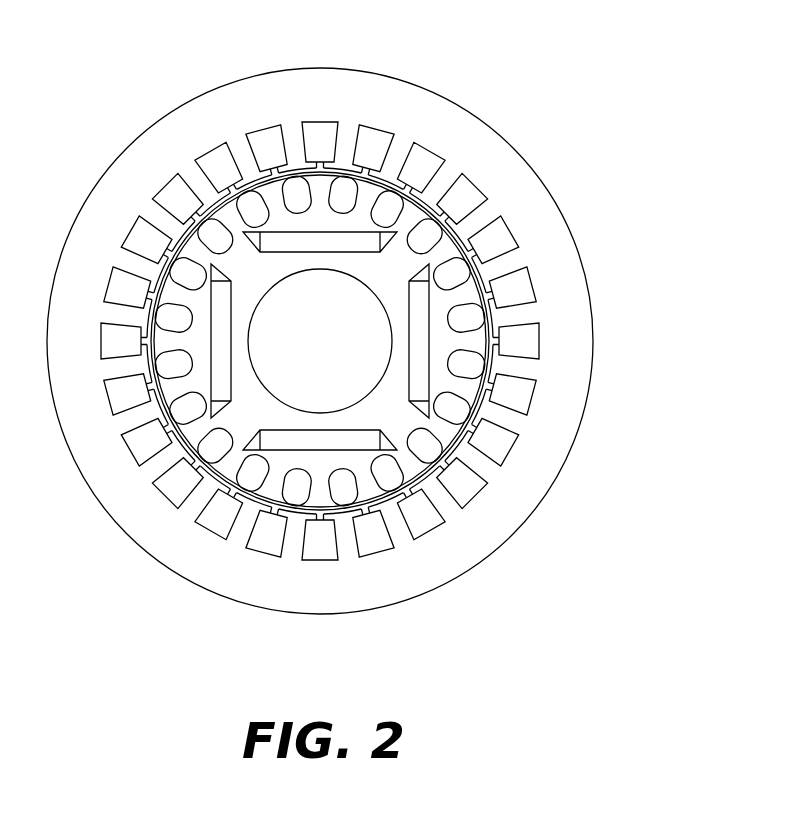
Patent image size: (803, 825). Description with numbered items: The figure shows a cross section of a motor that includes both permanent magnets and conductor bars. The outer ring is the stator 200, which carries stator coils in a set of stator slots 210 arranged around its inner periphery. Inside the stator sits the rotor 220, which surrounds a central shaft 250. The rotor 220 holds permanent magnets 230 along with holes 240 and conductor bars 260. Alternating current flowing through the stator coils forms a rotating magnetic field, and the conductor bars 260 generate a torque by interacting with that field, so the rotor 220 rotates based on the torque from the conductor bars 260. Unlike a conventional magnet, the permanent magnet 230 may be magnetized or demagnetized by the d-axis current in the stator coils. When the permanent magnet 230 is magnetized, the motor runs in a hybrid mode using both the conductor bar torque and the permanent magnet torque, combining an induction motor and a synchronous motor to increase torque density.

The stator 200 is at (329, 73).
The stator slot 210 is at (378, 133).
The rotor 220 is at (489, 341).
The permanent magnet 230 is at (299, 442).
The hole 240 is at (373, 460).
The shaft 250 is at (365, 288).
The conductor bar 260 is at (488, 319).